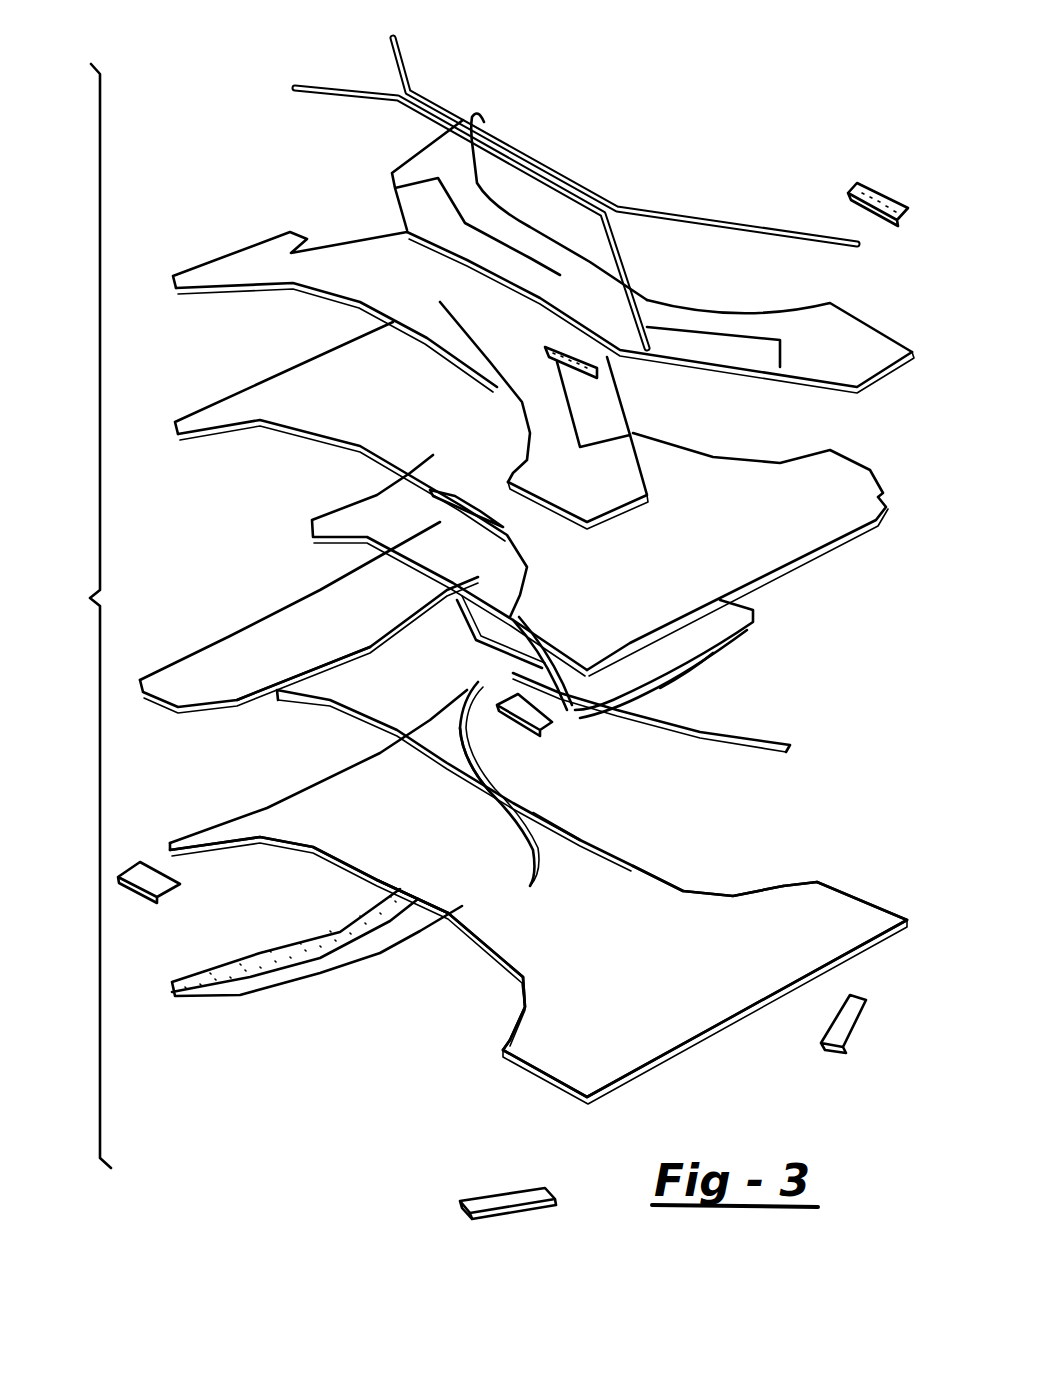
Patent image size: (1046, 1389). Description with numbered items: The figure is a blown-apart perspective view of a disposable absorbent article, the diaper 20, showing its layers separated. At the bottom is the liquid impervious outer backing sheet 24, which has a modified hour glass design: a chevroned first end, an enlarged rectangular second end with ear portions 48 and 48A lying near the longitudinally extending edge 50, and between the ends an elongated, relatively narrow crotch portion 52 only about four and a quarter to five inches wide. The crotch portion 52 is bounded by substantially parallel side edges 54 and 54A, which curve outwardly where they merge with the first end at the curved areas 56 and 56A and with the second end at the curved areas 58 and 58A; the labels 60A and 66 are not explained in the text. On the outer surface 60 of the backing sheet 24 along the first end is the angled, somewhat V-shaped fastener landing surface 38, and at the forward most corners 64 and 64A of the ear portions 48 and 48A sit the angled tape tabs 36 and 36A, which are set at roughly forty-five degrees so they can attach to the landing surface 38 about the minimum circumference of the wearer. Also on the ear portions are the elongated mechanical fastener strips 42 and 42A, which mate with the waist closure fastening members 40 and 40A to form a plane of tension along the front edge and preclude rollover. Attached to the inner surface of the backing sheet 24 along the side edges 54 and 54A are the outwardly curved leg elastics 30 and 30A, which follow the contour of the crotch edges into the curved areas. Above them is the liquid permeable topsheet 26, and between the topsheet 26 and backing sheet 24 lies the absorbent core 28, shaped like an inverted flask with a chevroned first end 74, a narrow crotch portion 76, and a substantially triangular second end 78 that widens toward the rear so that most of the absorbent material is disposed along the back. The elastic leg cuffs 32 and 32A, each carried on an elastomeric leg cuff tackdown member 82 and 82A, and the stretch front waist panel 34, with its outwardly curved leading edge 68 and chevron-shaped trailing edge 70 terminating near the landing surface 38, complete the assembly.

The diaper 20 is at (73, 616).
The backing sheet 24 is at (680, 1060).
The topsheet 26 is at (795, 547).
The absorbent core 28 is at (742, 636).
The leg elastic 30 is at (350, 717).
The leg elastic 30A is at (790, 745).
The elastic leg cuff 32 is at (337, 98).
The elastic leg cuff 32A is at (408, 62).
The stretch front waist panel 34 is at (227, 635).
The tape tab 36 is at (485, 1198).
The tape tab 36A is at (848, 1025).
The fastener landing surface 38 is at (267, 970).
The fastening member 40 is at (560, 363).
The fastening member 40A is at (880, 186).
The fastener landing surface 42 is at (140, 895).
The fastener landing surface 42A is at (550, 723).
The ear portion 48 is at (547, 1060).
The ear portion 48A is at (845, 900).
The longitudinally extending edge 50 is at (567, 1100).
The crotch portion 52 is at (437, 907).
The side edge 54 is at (470, 937).
The side edge 54A is at (590, 836).
The curved area 56 is at (315, 843).
The curved area 56A is at (466, 760).
The curved area 58 is at (537, 1013).
The curved area 58A is at (740, 893).
The outer surface 60 is at (268, 808).
The slot 60A is at (478, 682).
The forward most corner 64 is at (500, 1047).
The forward most corner 64A is at (815, 895).
The edge 66 is at (663, 888).
The leading edge 68 is at (300, 598).
The trailing edge 70 is at (350, 663).
The first end 74 is at (362, 507).
The crotch portion 76 is at (455, 587).
The second end 78 is at (680, 670).
The leg cuff tackdown member 82 is at (360, 282).
The leg cuff tackdown member 82A is at (650, 310).